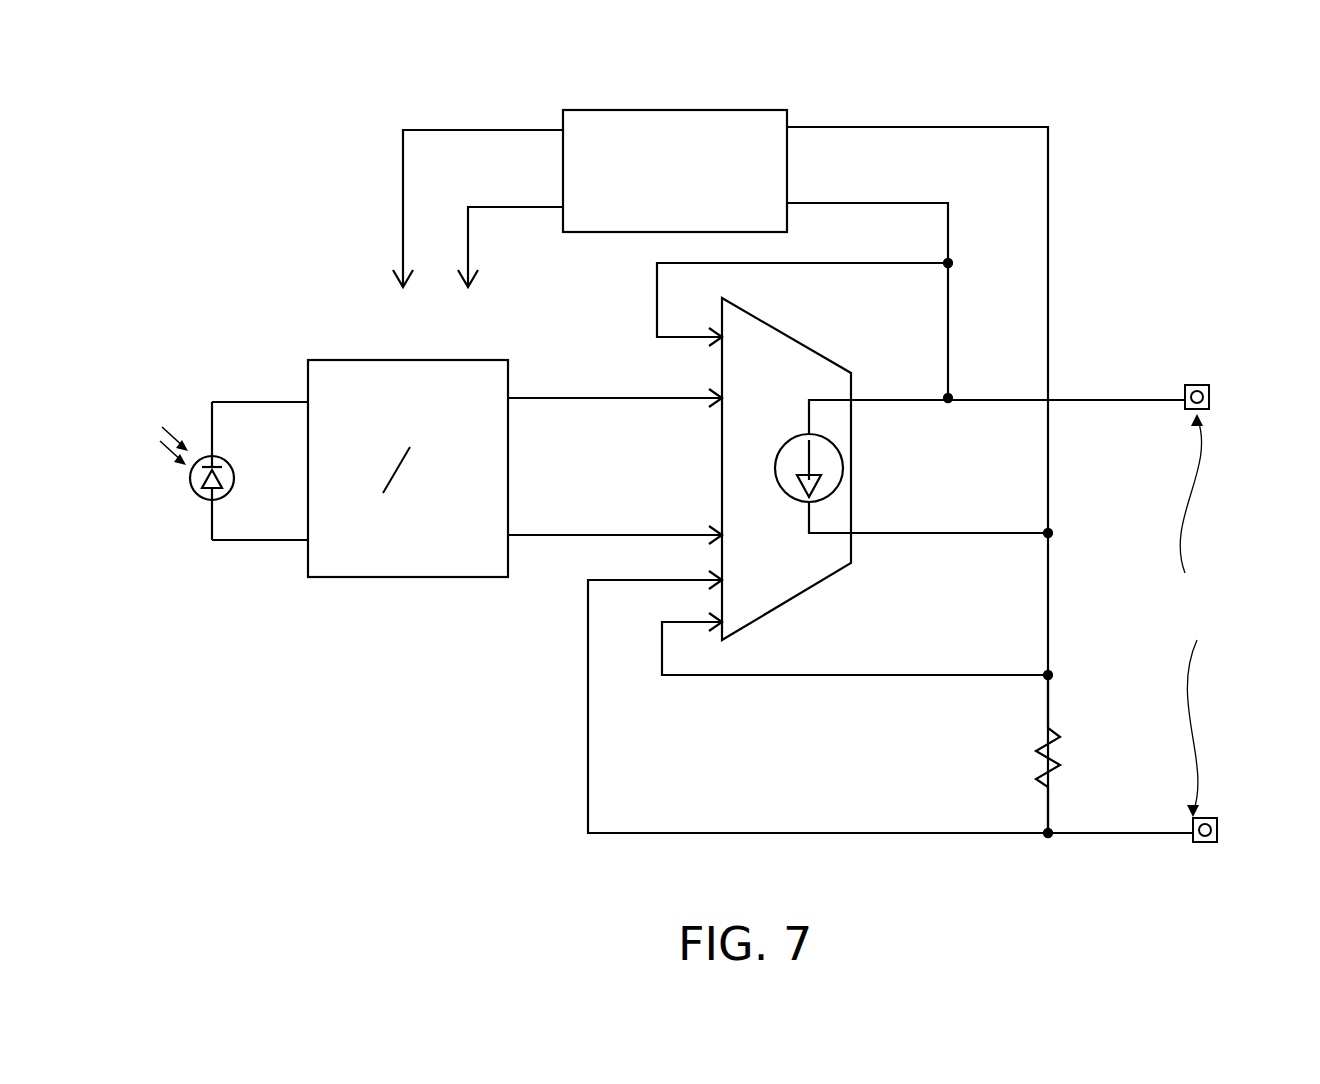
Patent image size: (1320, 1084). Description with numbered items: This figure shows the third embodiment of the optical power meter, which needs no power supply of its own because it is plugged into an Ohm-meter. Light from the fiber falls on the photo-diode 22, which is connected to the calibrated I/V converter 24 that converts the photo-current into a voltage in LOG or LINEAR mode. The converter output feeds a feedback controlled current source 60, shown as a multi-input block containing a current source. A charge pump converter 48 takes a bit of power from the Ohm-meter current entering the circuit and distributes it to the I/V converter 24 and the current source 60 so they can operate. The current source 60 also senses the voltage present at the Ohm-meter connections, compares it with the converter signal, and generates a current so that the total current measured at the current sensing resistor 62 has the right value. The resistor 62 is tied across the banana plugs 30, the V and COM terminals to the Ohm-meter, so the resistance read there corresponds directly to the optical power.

The photo-diode 22 is at (190, 504).
The calibrated I/V converter 24 is at (348, 584).
The banana plugs 30 is at (1199, 376).
The charge pump converter 48 is at (741, 102).
The feedback controlled current source 60 is at (780, 591).
The current sensing resistor 62 is at (1038, 765).